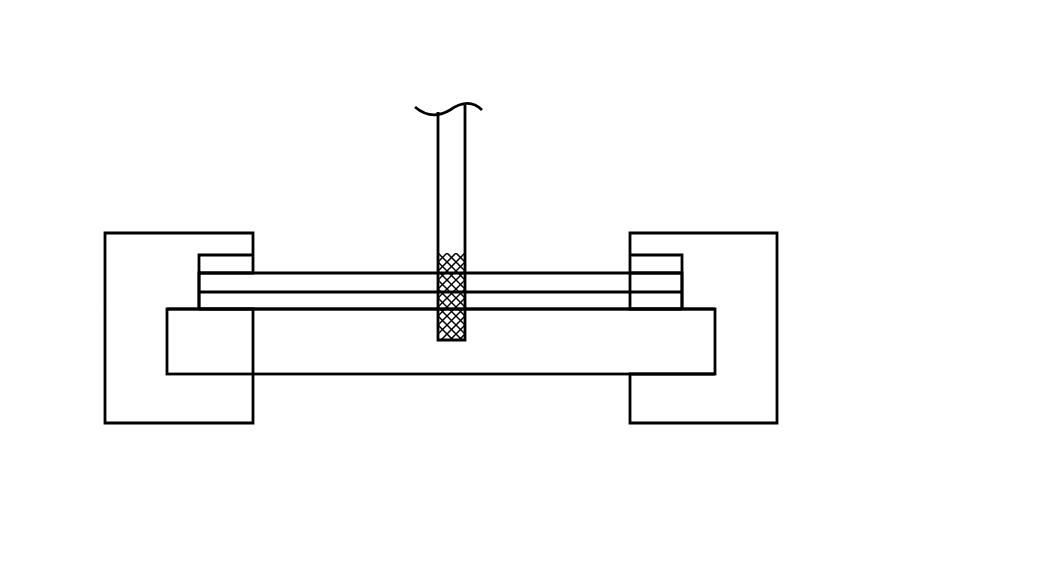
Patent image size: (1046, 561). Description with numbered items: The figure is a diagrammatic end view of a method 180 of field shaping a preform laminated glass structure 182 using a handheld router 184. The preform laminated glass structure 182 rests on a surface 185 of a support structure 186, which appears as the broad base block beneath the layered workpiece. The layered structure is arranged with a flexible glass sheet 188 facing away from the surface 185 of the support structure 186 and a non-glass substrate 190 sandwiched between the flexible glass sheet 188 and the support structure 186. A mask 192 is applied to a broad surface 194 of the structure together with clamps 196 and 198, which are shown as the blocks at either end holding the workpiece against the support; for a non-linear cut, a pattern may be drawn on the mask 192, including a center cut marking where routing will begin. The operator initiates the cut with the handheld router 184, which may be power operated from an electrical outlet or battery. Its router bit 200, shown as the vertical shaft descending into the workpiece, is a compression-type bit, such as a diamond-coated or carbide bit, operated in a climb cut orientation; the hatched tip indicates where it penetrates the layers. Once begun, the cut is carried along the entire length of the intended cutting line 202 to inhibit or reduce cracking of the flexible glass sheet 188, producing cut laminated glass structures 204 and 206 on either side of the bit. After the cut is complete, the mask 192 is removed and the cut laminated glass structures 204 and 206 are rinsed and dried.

The method of field shaping 180 is at (664, 83).
The preform laminated glass structure 182 is at (525, 215).
The handheld router 184 is at (391, 197).
The surface 185 is at (615, 307).
The support structure 186 is at (286, 397).
The flexible glass sheet 188 is at (565, 283).
The non-glass substrate 190 is at (275, 302).
The mask 192 is at (657, 263).
The broad surface 194 is at (307, 273).
The clamp 196 is at (110, 315).
The clamp 198 is at (759, 385).
The router bit 200 is at (458, 153).
The intended cutting line 202 is at (469, 261).
The cut laminated glass structure 204 is at (343, 342).
The cut laminated glass structure 206 is at (559, 342).